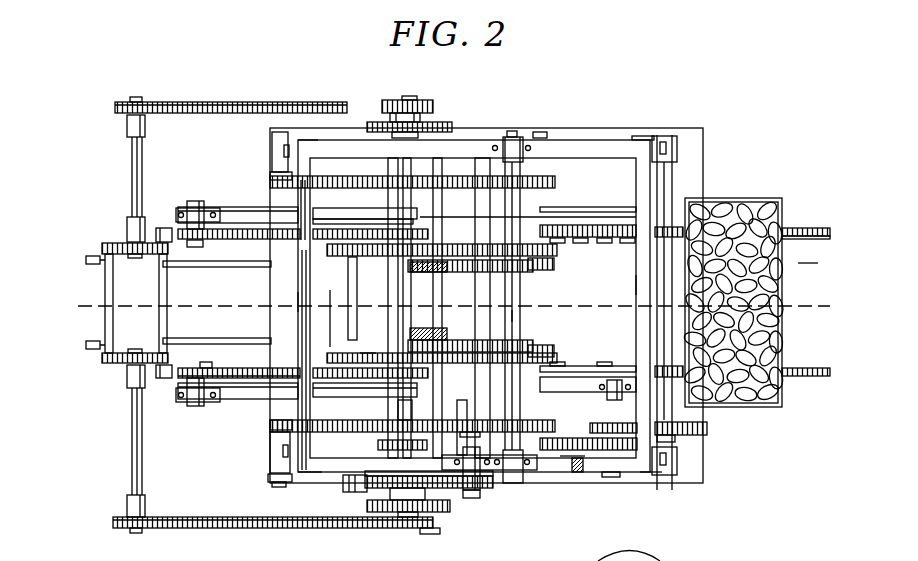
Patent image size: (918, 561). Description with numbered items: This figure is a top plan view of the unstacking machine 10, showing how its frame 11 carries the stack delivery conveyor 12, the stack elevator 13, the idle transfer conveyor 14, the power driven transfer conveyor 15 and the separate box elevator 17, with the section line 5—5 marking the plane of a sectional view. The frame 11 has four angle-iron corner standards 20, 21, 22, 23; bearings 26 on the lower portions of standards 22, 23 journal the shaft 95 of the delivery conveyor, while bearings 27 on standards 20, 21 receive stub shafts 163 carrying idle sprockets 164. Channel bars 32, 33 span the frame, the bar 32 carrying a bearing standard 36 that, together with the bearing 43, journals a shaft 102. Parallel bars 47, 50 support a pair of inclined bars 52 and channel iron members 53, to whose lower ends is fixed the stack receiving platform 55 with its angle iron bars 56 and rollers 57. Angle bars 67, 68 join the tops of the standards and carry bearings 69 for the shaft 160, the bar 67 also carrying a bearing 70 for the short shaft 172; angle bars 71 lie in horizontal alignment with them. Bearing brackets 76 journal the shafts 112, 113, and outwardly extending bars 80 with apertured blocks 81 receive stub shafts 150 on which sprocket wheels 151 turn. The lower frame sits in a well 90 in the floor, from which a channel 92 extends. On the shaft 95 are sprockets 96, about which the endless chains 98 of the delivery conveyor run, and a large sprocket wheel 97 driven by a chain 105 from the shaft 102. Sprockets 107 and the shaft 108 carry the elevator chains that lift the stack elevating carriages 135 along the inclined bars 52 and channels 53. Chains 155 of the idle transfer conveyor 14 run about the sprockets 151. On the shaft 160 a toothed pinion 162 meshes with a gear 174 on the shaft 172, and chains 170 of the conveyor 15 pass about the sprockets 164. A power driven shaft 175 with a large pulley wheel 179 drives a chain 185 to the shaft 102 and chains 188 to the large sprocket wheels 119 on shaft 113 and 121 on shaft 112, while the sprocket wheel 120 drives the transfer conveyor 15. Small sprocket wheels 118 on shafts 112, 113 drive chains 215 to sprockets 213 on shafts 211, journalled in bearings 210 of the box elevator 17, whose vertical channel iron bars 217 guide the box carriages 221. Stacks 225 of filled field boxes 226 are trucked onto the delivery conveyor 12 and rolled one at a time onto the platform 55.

The section line 5- 5 is at (85, 282).
The unstacking machine 10 is at (486, 265).
The frame 11 is at (569, 136).
The stack delivery conveyor 12 is at (802, 226).
The stack elevator 13 is at (369, 350).
The idle transfer conveyor 14 is at (258, 379).
The power driven transfer conveyor 15 is at (556, 181).
The separate box elevator 17 is at (98, 243).
The vertical corner standard 20 is at (309, 474).
The vertical corner standard 21 is at (308, 138).
The vertical corner standard 22 is at (653, 472).
The vertical corner standard 23 is at (649, 137).
The bearings 26 is at (680, 145).
The bearings 27 is at (276, 156).
The channel bar 32 is at (570, 392).
The channel bar 33 is at (578, 217).
The bearing standard 36 is at (613, 377).
The bearing 43 is at (605, 477).
The horizontal bar 47 is at (490, 301).
The bar 50 is at (437, 301).
The inclined bars 52 is at (427, 301).
The channel iron members 53 is at (530, 243).
The stack receiving platform 55 is at (604, 224).
The angle iron bars 56 is at (561, 374).
The rollers 57 is at (627, 243).
The horizontal angle iron bar 67 is at (583, 466).
The angle bar 68 is at (596, 140).
The bearings 69 is at (513, 137).
The bearing 70 is at (479, 470).
The horizontal angle bars 71 is at (309, 300).
The bearing brackets 76 is at (329, 213).
The outwardly extending bars 80 is at (232, 207).
The apertured blocks 81 is at (189, 203).
The well 90 is at (270, 326).
The channel 92 is at (808, 254).
The shaft 95 is at (672, 187).
The sprockets 96 is at (684, 232).
The sprocket wheel 97 is at (676, 441).
The endless chains 98 is at (821, 229).
The shaft 102 is at (610, 404).
The chain 105 is at (708, 428).
The sprockets 107 is at (552, 260).
The shaft 108 is at (354, 292).
The shaft 112 is at (405, 411).
The shaft 113 is at (407, 197).
The small sprocket wheels 118 is at (426, 104).
The sprocket wheel 119 is at (434, 125).
The sprocket wheel 120 is at (430, 478).
The sprocket wheel 121 is at (441, 518).
The stack elevating carriages 135 is at (500, 278).
The stub shafts 150 is at (196, 201).
The sprocket wheels 151 is at (212, 362).
The endless chains 155 is at (264, 240).
The shaft 160 is at (518, 316).
The toothed pinion 162 is at (530, 462).
The stub shafts 163 is at (279, 483).
The idle sprockets 164 is at (278, 430).
The endless chains 170 is at (461, 185).
The short shaft 172 is at (472, 498).
The gear 174 is at (462, 426).
The power driven shaft 175 is at (403, 299).
The large pulley wheel 179 is at (366, 501).
The endless chain 185 is at (574, 432).
The endless chains 188 is at (392, 118).
The bearings 210 is at (127, 128).
The shafts 211 is at (132, 166).
The sprockets 213 is at (140, 103).
The chains 215 is at (218, 102).
The channel iron bars 217 is at (162, 228).
The box carriages 221 is at (246, 268).
The stacks 225 is at (780, 196).
The filled field boxes 226 is at (746, 198).